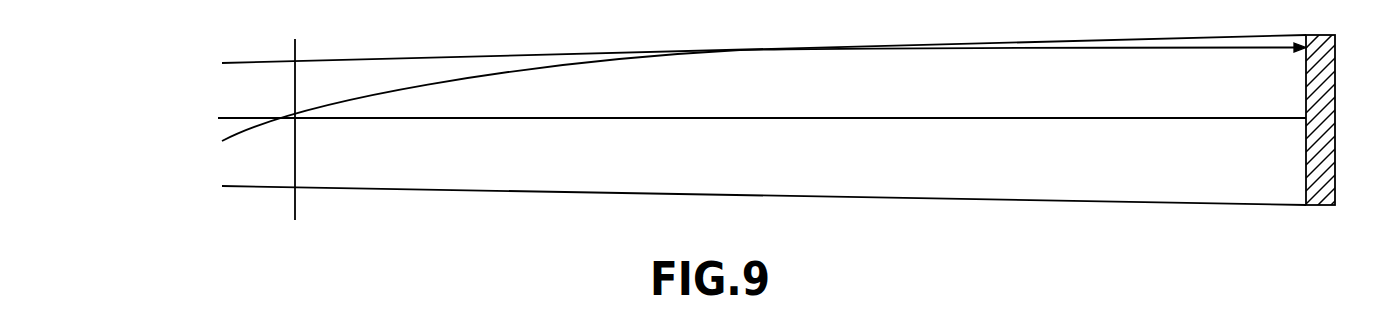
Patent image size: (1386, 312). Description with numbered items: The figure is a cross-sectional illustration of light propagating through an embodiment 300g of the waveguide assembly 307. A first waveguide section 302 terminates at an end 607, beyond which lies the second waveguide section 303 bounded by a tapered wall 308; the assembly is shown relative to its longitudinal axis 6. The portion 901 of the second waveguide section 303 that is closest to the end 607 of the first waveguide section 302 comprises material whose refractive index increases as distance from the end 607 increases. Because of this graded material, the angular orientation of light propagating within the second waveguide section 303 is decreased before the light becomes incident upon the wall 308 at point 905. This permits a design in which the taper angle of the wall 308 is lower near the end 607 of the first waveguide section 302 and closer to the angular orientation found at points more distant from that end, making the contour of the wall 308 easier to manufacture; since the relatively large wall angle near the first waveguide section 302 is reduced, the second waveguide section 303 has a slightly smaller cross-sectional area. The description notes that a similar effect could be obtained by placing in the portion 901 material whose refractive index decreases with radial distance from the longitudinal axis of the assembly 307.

The embodiment 300g is at (1160, 203).
The wall 308 is at (658, 193).
The optical axis 6 is at (500, 118).
The end 607 is at (295, 198).
The point 905 is at (738, 50).
The first waveguide section 302 is at (257, 165).
The portion 901 is at (398, 165).
The second waveguide section 303 is at (875, 175).
The assembly 307 is at (972, 120).